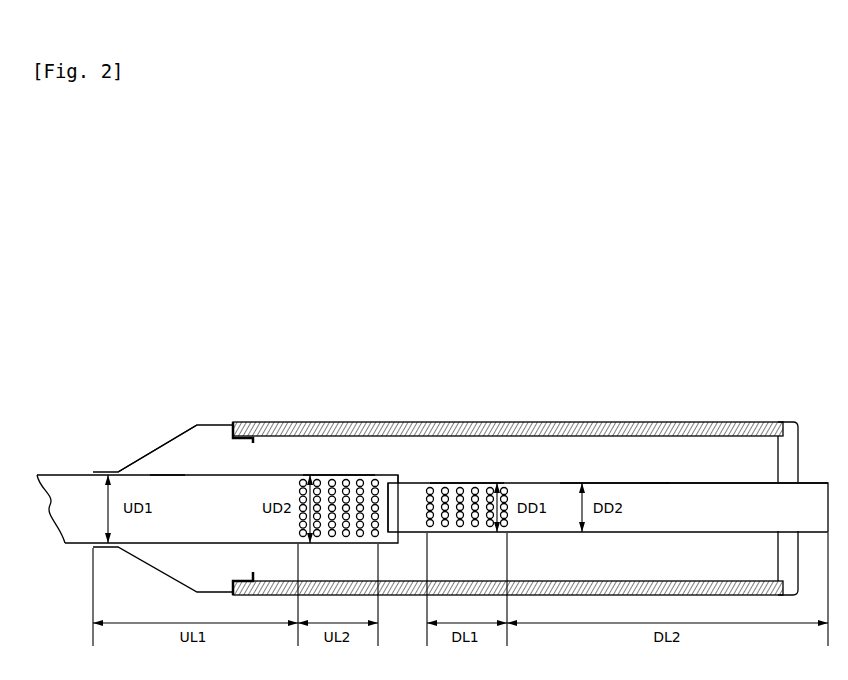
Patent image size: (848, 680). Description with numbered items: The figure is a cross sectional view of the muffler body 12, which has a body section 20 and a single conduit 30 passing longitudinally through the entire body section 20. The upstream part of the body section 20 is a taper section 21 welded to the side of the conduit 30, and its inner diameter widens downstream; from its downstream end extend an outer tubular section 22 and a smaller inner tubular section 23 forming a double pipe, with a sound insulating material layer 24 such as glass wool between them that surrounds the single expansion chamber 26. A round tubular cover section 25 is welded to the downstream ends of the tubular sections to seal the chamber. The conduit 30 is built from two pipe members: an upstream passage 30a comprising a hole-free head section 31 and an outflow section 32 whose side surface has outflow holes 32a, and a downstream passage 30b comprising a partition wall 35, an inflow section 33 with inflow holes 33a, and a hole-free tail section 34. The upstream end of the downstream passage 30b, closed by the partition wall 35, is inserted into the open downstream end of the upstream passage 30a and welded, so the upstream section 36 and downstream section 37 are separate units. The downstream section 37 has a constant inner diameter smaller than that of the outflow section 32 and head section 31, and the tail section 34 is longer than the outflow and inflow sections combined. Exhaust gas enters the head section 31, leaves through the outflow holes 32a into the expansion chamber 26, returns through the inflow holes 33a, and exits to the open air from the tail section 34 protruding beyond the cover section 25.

The muffler body 12 is at (412, 240).
The body section 20 is at (145, 300).
The taper section 21 is at (167, 441).
The outer tubular section 22 is at (255, 422).
The inner tubular section 23 is at (304, 422).
The sound insulating material layer 24 is at (262, 475).
The cover section 25 is at (800, 450).
The expansion chamber 26 is at (703, 462).
The conduit 30 is at (610, 300).
The upstream passage 30a is at (167, 462).
The downstream passage 30b is at (653, 472).
The head section 31 is at (344, 475).
The outflow section 32 is at (367, 475).
The outflow holes 32a is at (377, 458).
The inflow section 33 is at (498, 483).
The inflow holes 33a is at (505, 484).
The tail section 34 is at (568, 481).
The partition wall 35 is at (390, 508).
The upstream section 36 is at (345, 337).
The downstream section 37 is at (535, 337).